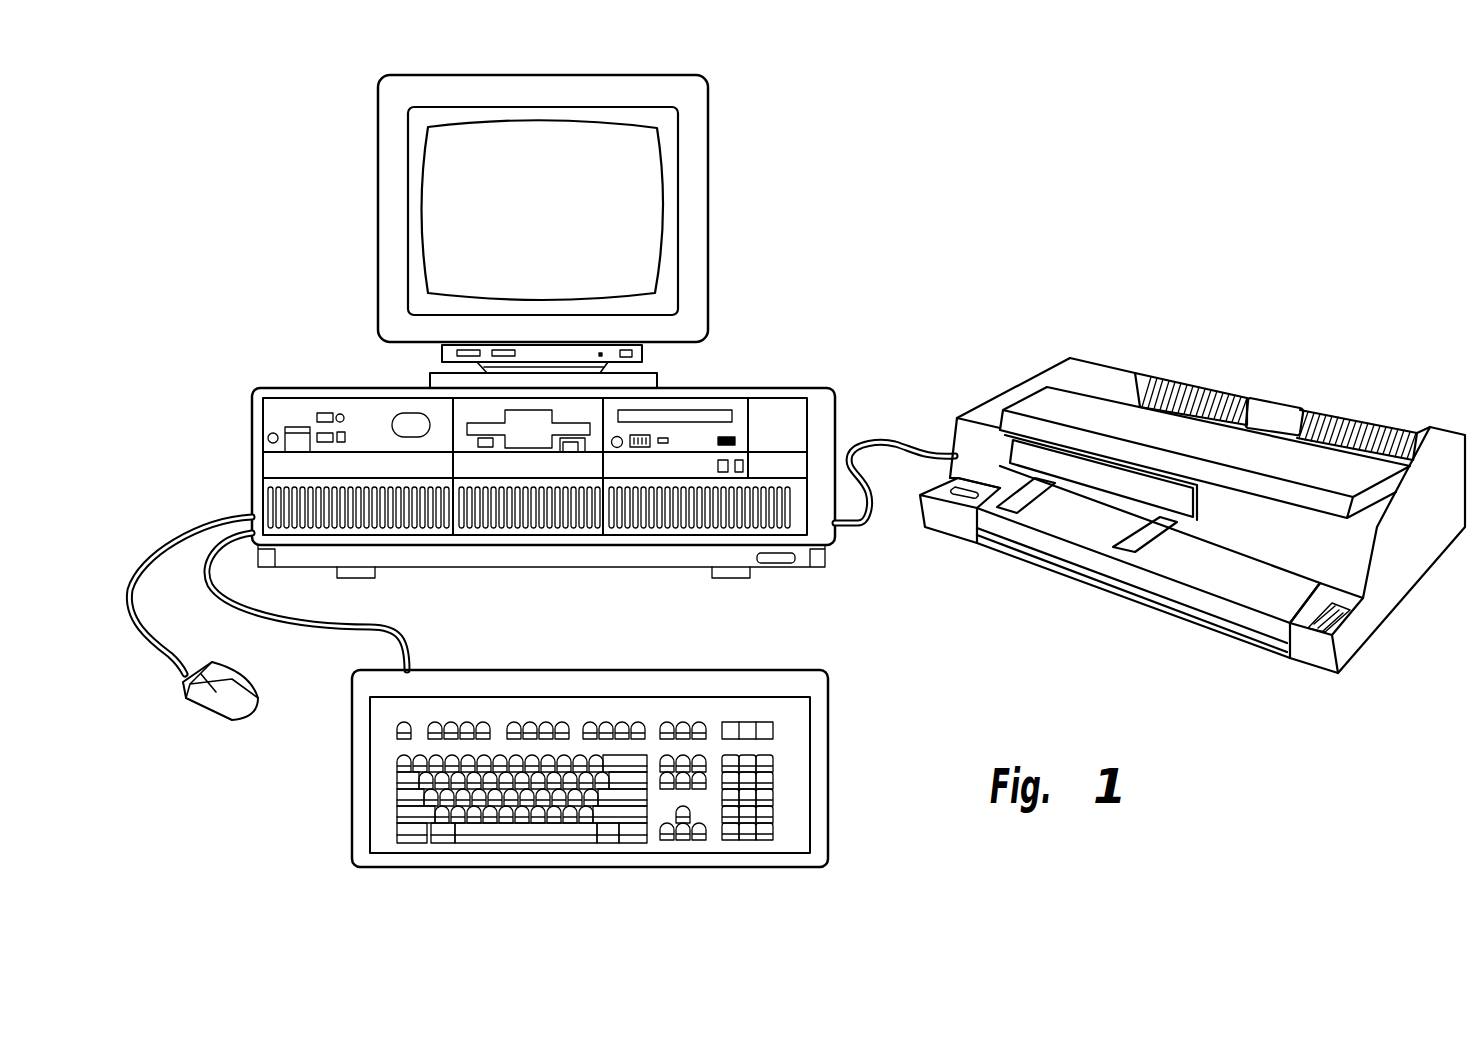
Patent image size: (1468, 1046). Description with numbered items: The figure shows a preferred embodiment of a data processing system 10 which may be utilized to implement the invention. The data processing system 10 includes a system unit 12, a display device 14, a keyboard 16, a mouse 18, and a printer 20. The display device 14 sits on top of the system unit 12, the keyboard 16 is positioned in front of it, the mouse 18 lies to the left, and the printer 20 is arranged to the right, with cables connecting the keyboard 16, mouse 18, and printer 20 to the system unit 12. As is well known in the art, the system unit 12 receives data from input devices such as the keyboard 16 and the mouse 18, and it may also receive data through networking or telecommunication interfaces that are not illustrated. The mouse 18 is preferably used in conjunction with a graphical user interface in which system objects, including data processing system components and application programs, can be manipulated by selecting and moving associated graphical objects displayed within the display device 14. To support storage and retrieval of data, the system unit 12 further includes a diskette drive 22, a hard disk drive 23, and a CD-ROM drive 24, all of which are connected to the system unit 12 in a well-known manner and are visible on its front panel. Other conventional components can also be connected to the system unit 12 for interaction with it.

The data processing system 10 is at (910, 128).
The system unit 12 is at (805, 380).
The display device 14 is at (722, 232).
The keyboard 16 is at (667, 660).
The mouse 18 is at (205, 707).
The printer 20 is at (978, 384).
The diskette drive 22 is at (528, 447).
The hard disk drive 23 is at (682, 466).
The CD-ROM drive 24 is at (696, 416).